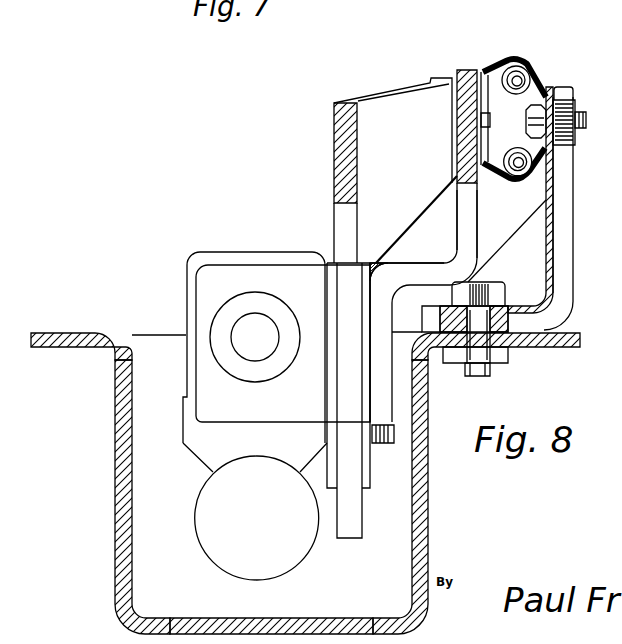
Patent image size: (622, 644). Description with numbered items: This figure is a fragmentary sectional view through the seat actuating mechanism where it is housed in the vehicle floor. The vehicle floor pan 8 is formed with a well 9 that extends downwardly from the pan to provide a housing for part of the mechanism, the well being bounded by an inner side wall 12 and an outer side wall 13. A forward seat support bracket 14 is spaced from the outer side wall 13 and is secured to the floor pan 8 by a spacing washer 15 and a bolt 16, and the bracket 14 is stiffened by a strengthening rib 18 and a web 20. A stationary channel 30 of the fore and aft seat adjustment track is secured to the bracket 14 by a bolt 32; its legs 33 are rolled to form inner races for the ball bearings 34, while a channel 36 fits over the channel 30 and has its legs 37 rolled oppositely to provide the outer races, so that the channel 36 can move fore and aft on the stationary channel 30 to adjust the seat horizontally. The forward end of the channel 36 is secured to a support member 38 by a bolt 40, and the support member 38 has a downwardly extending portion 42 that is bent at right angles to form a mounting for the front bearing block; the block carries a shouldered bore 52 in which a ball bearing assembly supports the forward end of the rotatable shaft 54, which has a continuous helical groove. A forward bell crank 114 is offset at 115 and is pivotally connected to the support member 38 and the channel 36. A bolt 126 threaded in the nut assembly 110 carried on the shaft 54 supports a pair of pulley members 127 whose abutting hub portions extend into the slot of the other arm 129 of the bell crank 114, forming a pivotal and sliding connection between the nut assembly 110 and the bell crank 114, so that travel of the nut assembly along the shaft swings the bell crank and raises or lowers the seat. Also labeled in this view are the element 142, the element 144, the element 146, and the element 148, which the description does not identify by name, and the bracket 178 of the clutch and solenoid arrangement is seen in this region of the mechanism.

The vehicle floor pan 8 is at (63, 350).
The well 9 is at (283, 618).
The inner side wall 12 is at (115, 510).
The outer side wall 13 is at (428, 515).
The forward seat support bracket 14 is at (556, 213).
The spacing washer 15 is at (510, 313).
The bolt 16 is at (477, 376).
The strengthening rib 18 is at (573, 176).
The web 20 is at (540, 247).
The channel 30 is at (537, 86).
The bolt 32 is at (586, 119).
The leg 33 is at (526, 118).
The ball bearing 34 is at (532, 70).
The channel 36 is at (487, 72).
The leg 37 is at (522, 66).
The support member 38 is at (459, 70).
The bolt 40 is at (481, 120).
The downwardly extending portion 42 is at (423, 302).
The shouldered bore 52 is at (293, 302).
The rotatable shaft 54 is at (247, 325).
The nut assembly 110 is at (220, 560).
The forward bell crank 114 is at (340, 134).
The offset 115 is at (402, 90).
The bolt 126 is at (380, 443).
The pulley member 127 is at (332, 488).
The arm 129 is at (349, 538).
The bracket vertical leg 142 is at (477, 214).
The bracket base 144 is at (425, 262).
The housing 146 is at (203, 382).
The weld 148 is at (375, 262).
The bracket 178 is at (197, 465).